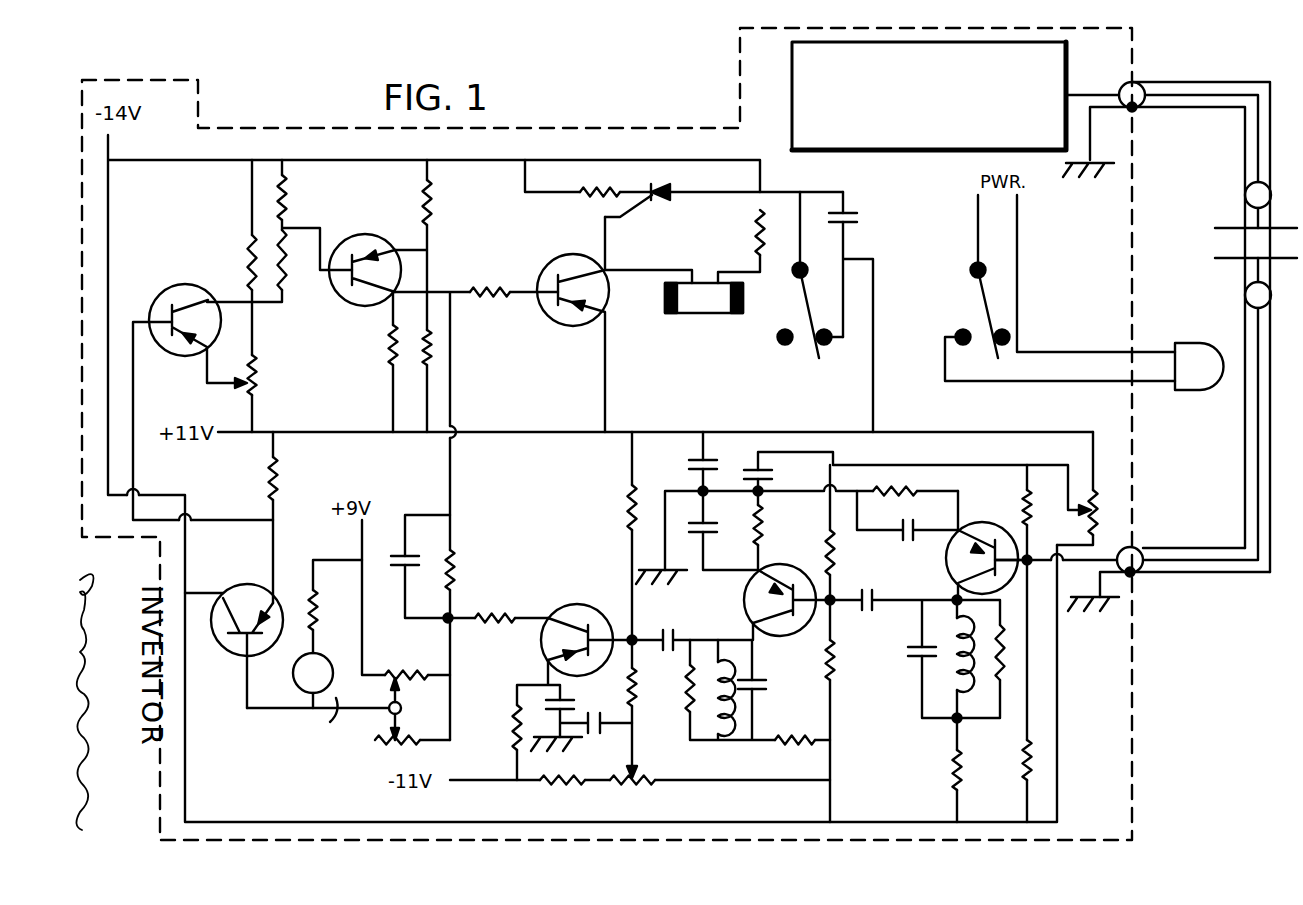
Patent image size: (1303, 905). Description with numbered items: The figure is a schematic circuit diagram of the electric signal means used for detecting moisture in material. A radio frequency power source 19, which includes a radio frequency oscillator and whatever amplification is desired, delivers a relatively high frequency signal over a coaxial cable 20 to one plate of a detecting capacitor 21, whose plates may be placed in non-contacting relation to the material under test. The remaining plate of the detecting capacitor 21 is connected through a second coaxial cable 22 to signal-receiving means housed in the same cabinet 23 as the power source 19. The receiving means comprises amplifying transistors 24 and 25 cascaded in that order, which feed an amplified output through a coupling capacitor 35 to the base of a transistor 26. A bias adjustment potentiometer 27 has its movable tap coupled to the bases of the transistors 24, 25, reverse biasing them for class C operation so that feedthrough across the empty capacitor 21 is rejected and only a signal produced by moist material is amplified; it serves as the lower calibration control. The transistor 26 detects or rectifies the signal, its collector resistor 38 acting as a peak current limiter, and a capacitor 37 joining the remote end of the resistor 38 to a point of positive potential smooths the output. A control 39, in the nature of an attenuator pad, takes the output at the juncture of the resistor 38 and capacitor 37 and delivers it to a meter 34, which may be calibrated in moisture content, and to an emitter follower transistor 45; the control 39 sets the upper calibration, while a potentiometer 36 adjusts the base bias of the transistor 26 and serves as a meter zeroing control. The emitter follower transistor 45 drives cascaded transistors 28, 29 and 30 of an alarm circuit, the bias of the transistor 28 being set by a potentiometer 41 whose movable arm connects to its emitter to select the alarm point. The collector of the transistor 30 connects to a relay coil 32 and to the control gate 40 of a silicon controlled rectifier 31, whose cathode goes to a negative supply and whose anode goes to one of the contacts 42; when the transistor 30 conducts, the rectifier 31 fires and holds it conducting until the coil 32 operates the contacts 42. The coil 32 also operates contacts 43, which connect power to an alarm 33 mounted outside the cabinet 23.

The radio frequency power source 19 is at (912, 144).
The coaxial cable 20 is at (1198, 83).
The detecting capacitor 21 is at (1268, 254).
The coaxial cable 22 is at (1270, 410).
The cabinet 23 is at (1132, 676).
The amplifying transistor 24 is at (973, 569).
The amplifying transistor 25 is at (771, 612).
The transistor 26 is at (571, 653).
The bias adjustment potentiometer 27 is at (1104, 532).
The transistor 28 is at (207, 331).
The transistor 29 is at (396, 283).
The transistor 30 is at (602, 301).
The silicon controlled rectifier 31 is at (653, 172).
The relay coil 32 is at (712, 308).
The alarm 33 is at (1201, 381).
The meter 34 is at (323, 683).
The coupling capacitor 35 is at (663, 620).
The potentiometer 36 is at (647, 758).
The capacitor 37 is at (393, 566).
The collector resistor 38 is at (508, 610).
The control 39 is at (427, 718).
The control gate 40 is at (630, 220).
The potentiometer 41 is at (262, 370).
The contacts 42 is at (804, 328).
The contacts 43 is at (983, 328).
The emitter follower transistor 45 is at (250, 615).